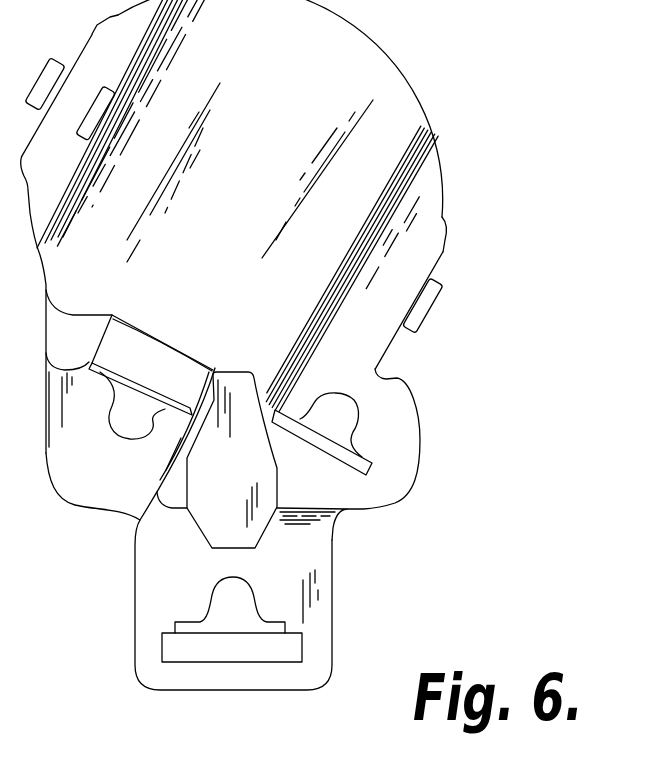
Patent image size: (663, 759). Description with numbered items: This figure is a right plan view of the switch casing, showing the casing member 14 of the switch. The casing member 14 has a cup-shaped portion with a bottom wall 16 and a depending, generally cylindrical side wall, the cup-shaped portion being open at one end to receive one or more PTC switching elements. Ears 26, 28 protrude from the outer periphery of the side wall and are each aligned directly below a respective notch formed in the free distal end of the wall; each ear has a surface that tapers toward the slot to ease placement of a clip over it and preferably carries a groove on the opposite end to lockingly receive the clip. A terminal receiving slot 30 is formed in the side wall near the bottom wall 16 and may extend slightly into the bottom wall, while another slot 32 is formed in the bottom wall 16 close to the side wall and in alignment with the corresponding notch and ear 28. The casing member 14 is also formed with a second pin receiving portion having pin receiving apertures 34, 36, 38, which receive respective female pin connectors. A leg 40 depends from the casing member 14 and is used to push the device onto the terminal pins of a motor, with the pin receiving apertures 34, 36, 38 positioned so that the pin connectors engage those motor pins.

The casing member 14 is at (408, 85).
The bottom wall 16 is at (366, 182).
The ear 26 is at (432, 312).
The ear 28 is at (46, 65).
The slot 32 is at (110, 92).
The terminal receiving slot 30 is at (166, 345).
The pin receiving aperture 34 is at (372, 455).
The pin receiving aperture 36 is at (123, 440).
The pin receiving aperture 38 is at (226, 663).
The leg 40 is at (247, 491).